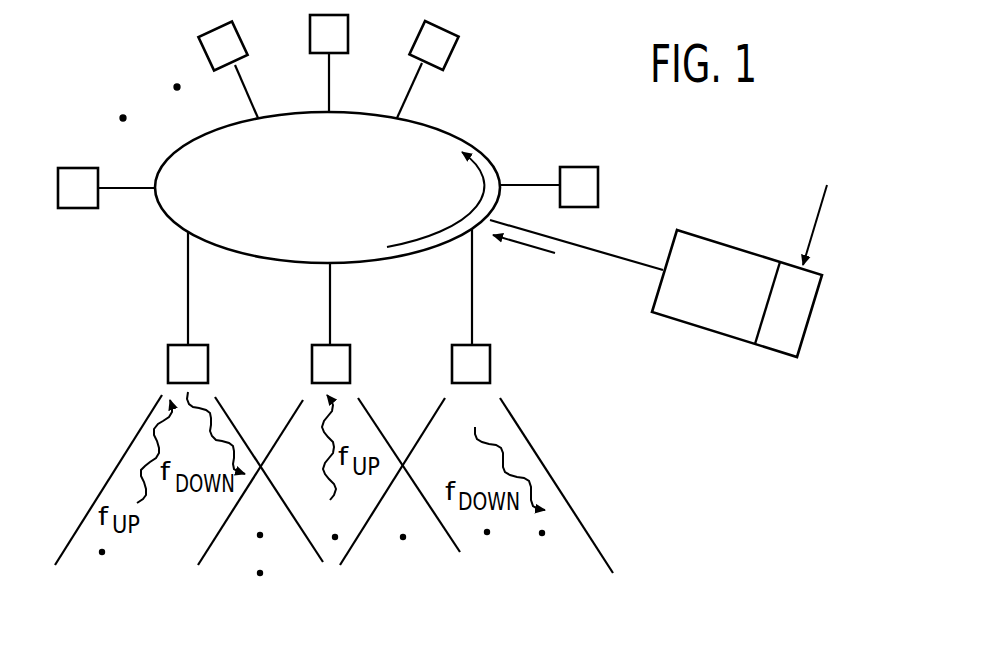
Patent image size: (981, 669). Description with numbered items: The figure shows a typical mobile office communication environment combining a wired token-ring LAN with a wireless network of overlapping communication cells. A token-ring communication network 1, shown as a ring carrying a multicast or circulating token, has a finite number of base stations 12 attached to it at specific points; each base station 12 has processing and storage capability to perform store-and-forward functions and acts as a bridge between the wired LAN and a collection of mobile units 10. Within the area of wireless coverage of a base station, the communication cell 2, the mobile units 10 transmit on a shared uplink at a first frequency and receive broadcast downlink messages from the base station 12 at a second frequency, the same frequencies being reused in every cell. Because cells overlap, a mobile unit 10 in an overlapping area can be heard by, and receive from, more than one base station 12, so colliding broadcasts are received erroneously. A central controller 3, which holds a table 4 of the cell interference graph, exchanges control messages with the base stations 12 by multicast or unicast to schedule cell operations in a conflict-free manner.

The token-ring communication network 1 is at (210, 132).
The communication cell 2 is at (128, 448).
The central controller 3 is at (747, 258).
The table G=(V,E) 4 is at (790, 333).
The mobile units 10 is at (102, 552).
The base stations 12 is at (77, 172).